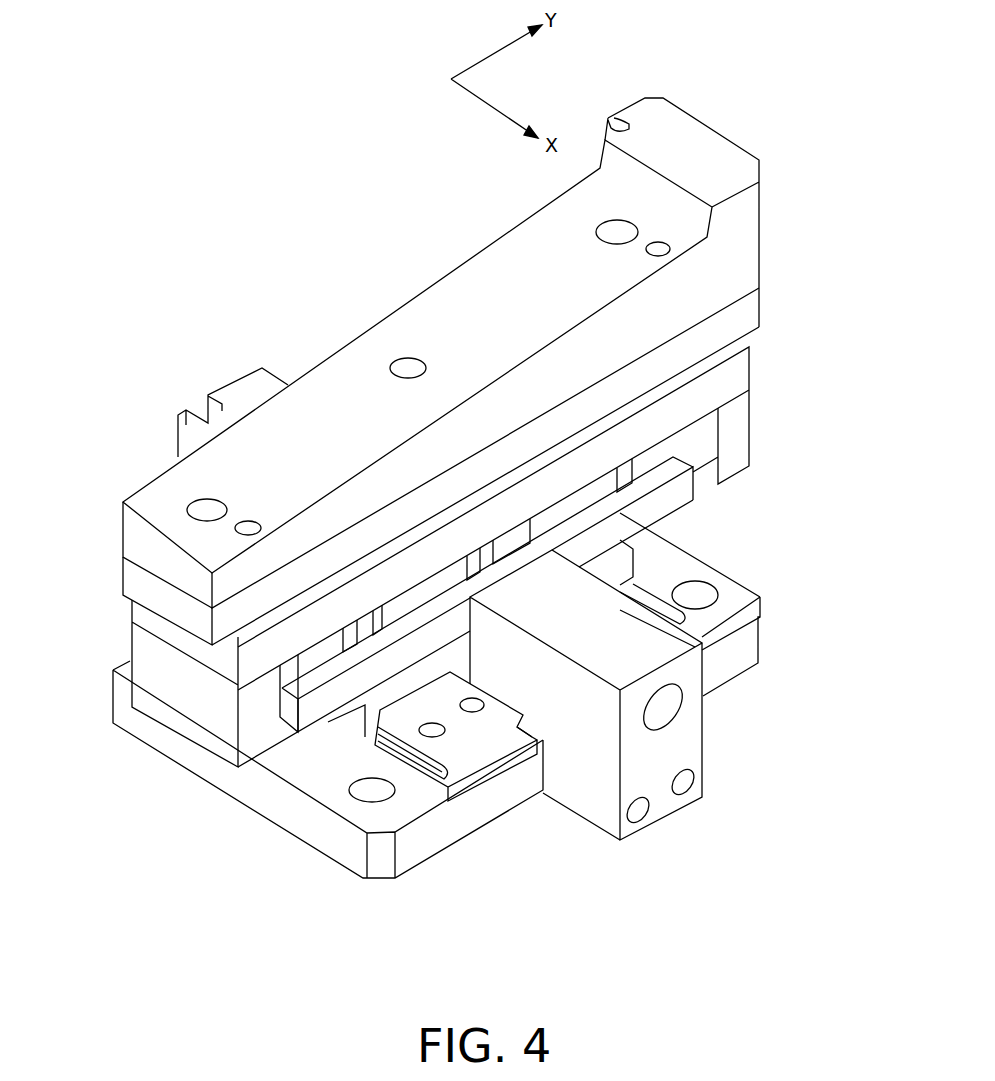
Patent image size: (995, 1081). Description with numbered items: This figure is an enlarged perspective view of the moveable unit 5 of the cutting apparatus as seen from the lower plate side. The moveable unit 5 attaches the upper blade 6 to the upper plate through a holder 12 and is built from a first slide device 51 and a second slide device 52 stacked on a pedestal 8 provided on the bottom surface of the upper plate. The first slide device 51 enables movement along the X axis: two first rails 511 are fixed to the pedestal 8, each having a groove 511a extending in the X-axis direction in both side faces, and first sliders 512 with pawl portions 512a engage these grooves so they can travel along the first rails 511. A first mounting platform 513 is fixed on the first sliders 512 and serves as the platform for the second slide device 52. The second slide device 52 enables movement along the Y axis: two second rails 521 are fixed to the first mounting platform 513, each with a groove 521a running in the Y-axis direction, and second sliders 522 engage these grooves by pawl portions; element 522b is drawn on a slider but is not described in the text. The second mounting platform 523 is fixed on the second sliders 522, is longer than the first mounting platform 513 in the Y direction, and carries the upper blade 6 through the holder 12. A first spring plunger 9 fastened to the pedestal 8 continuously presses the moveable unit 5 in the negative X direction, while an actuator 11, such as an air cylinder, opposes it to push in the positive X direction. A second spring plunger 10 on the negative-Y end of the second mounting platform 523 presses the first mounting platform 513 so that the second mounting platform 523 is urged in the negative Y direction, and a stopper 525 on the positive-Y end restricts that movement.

The moveable unit 5 is at (103, 588).
The upper blade 6 is at (367, 330).
The pedestal 8 is at (342, 865).
The first spring plunger 9 is at (593, 827).
The second spring plunger 10 is at (128, 645).
The actuator 11 is at (222, 390).
The holder 12 is at (127, 570).
The first slide device 51 is at (330, 747).
The first rail 511 is at (458, 735).
The groove 511a is at (427, 780).
The first slider 512 is at (407, 725).
The pawl portion 512a is at (385, 768).
The first mounting platform 513 is at (665, 512).
The second slide device 52 is at (765, 370).
The second rail 521 is at (235, 758).
The groove 521a is at (300, 660).
The second slider 522 is at (672, 490).
The slider block 522b is at (627, 475).
The second mounting platform 523 is at (745, 362).
The stopper 525 is at (740, 423).